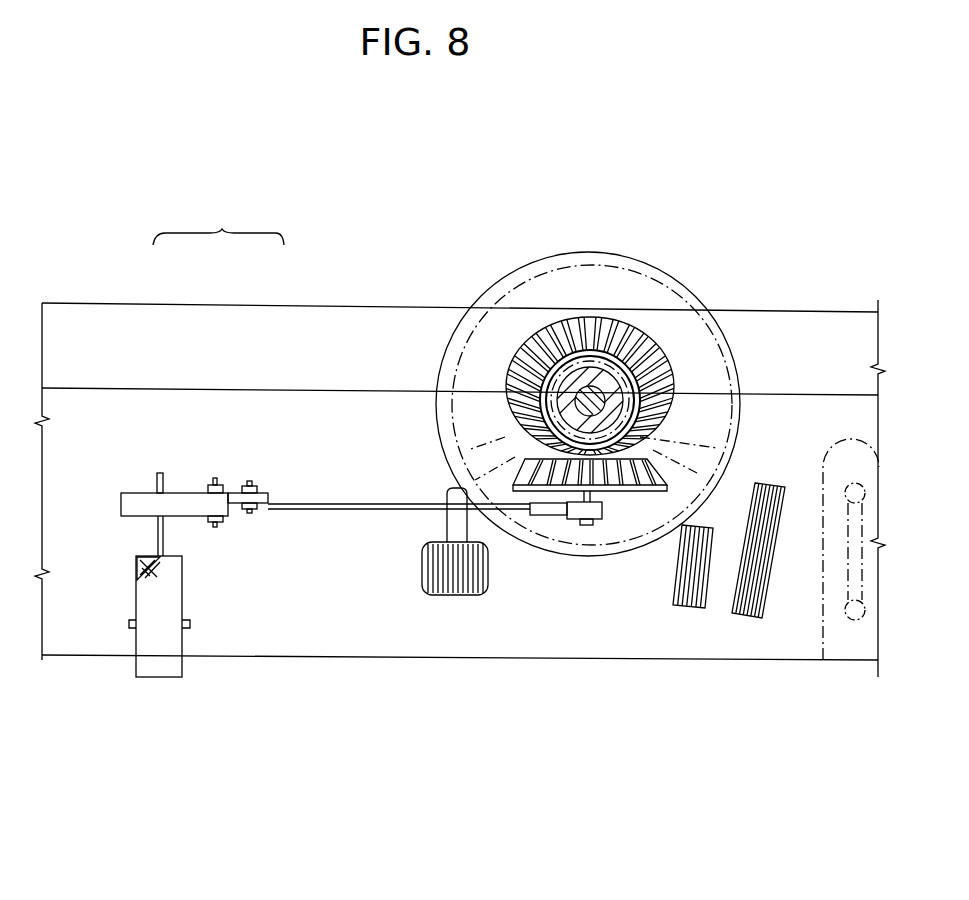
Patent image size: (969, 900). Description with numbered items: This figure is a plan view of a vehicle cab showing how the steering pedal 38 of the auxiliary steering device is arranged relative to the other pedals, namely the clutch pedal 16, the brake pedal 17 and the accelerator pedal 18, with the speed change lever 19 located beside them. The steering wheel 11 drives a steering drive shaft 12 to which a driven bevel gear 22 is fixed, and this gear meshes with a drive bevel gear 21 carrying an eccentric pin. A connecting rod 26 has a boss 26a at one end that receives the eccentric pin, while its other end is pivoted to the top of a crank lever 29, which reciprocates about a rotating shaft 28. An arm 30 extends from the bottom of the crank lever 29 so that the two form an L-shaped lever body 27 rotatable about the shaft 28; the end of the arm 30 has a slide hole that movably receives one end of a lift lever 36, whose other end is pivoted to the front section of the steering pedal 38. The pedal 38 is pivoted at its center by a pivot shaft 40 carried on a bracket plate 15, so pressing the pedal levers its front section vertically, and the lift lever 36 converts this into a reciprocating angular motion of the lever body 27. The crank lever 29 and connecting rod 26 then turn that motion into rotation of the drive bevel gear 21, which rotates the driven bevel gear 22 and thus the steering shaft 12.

The steering wheel 11 is at (672, 276).
The steering drive shaft 12 is at (648, 356).
The driven bevel gear 22 is at (612, 380).
The drive bevel gear 21 is at (637, 492).
The connecting rod 26 is at (360, 510).
The boss 26a is at (567, 520).
The clutch pedal 16 is at (450, 596).
The bracket plate 15 is at (233, 567).
The L-shaped lever body 27 is at (218, 220).
The rotating shaft 28 is at (215, 478).
The crank lever 29 is at (248, 482).
The arm 30 is at (140, 500).
The lift lever 36 is at (156, 535).
The steering pedal 38 is at (147, 680).
The pivot shaft 40 is at (188, 627).
The brake pedal 17 is at (687, 607).
The accelerator pedal 18 is at (750, 617).
The speed change lever 19 is at (857, 623).